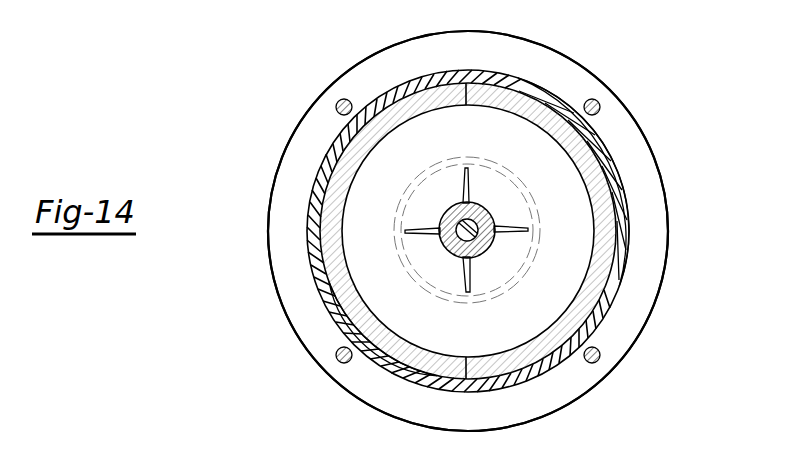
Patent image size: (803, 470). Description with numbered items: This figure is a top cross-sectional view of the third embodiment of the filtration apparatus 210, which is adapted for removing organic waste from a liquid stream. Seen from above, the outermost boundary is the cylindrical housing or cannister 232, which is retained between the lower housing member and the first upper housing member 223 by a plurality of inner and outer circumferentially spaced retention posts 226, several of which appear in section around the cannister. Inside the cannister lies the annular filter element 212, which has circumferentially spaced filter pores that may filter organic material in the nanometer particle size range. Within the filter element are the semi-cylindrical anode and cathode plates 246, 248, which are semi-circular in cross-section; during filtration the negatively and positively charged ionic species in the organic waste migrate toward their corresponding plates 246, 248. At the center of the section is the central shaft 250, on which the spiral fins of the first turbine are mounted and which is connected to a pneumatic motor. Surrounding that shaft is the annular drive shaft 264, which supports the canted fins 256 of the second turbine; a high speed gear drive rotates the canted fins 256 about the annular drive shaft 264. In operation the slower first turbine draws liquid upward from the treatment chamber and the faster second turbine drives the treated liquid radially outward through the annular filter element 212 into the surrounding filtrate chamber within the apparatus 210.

The filtration apparatus 210 is at (272, 119).
The annular filter element 212 is at (510, 173).
The first upper housing member 223 is at (548, 68).
The retention posts 226 is at (599, 101).
The cylindrical housing or cannister 232 is at (627, 263).
The anode plate 246 is at (335, 268).
The cathode plate 248 is at (604, 288).
The central shaft 250 is at (448, 250).
The canted fins 256 is at (492, 229).
The annular drive shaft 264 is at (448, 207).